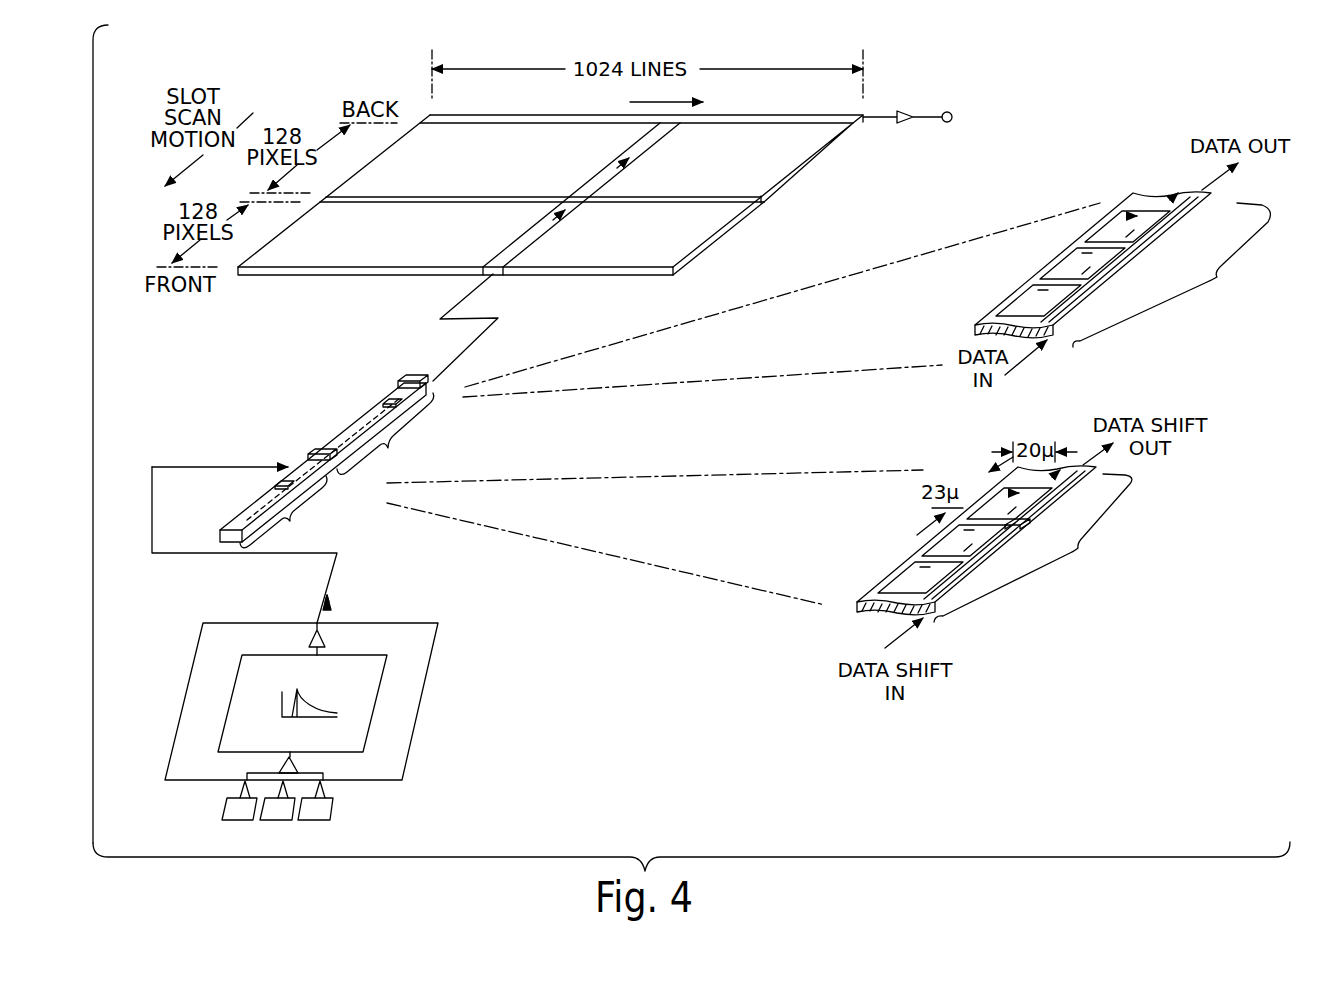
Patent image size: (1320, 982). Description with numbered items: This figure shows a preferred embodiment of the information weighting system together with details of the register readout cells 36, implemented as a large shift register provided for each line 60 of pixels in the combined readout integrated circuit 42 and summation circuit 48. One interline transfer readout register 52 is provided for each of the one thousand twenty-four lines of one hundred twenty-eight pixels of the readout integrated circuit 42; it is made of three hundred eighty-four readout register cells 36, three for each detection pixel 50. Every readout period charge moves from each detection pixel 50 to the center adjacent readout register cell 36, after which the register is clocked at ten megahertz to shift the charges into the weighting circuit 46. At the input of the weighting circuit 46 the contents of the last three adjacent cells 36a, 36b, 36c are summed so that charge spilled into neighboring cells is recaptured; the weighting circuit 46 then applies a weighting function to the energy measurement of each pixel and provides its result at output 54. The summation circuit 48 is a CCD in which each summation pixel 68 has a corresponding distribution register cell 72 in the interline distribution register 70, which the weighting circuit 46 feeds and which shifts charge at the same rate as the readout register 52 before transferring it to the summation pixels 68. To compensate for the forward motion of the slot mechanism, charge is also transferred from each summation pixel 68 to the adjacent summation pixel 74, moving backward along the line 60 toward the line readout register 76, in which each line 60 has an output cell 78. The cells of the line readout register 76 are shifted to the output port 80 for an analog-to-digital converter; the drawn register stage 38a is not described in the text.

The readout integrated circuit 42 is at (721, 243).
The summation circuit 48 is at (814, 163).
The weighting circuit 46 is at (766, 203).
The line readout register 76 is at (778, 106).
The output port 80 is at (925, 118).
The line 60 is at (442, 383).
The output cell 78 is at (403, 372).
The distribution register cell 72 is at (345, 430).
The summation pixel 68 is at (377, 397).
The adjacent summation pixel 74 is at (1073, 268).
The interline distribution register 70 is at (803, 333).
The interline transfer readout register 52 is at (686, 544).
The detection pixel 50 is at (272, 484).
The register readout cells 36 is at (252, 507).
The register stage 38a is at (1020, 515).
The output of the weighting circuit 54 is at (339, 557).
The readout register cell 36a is at (223, 803).
The readout register cell 36b is at (273, 821).
The readout register cell 36c is at (333, 814).